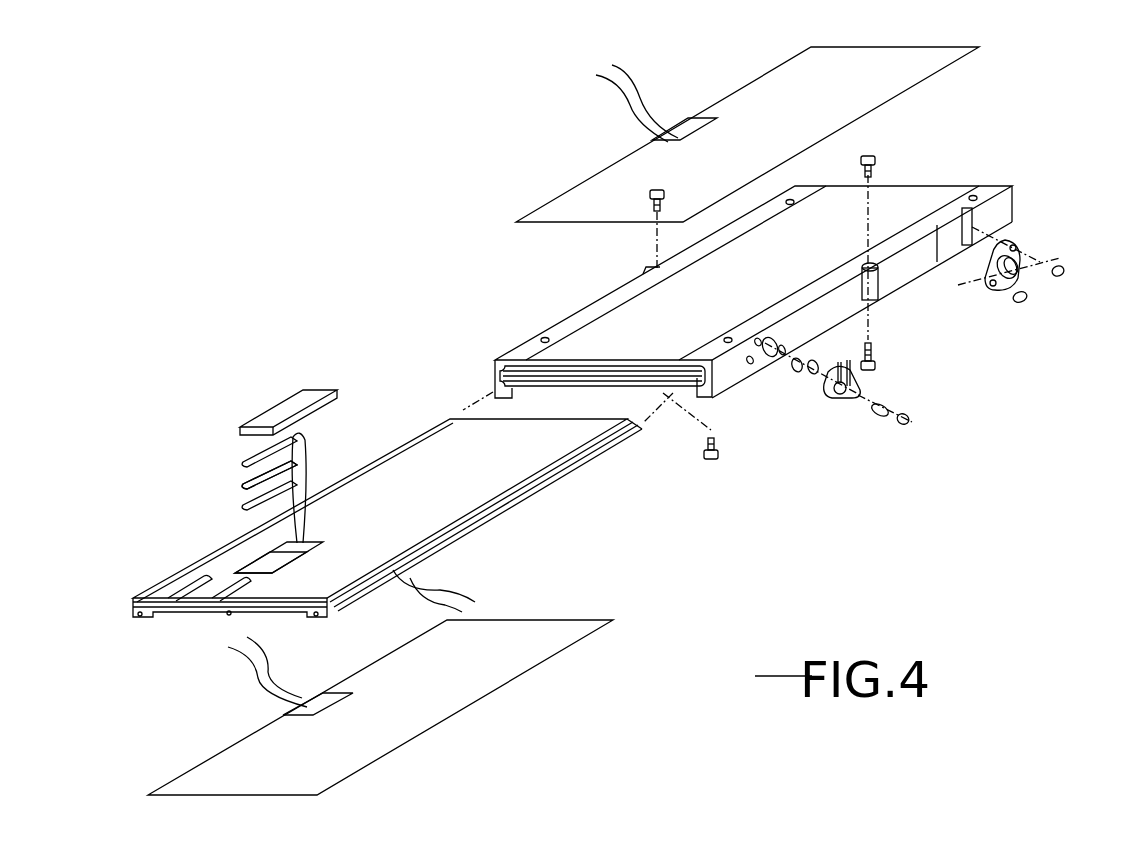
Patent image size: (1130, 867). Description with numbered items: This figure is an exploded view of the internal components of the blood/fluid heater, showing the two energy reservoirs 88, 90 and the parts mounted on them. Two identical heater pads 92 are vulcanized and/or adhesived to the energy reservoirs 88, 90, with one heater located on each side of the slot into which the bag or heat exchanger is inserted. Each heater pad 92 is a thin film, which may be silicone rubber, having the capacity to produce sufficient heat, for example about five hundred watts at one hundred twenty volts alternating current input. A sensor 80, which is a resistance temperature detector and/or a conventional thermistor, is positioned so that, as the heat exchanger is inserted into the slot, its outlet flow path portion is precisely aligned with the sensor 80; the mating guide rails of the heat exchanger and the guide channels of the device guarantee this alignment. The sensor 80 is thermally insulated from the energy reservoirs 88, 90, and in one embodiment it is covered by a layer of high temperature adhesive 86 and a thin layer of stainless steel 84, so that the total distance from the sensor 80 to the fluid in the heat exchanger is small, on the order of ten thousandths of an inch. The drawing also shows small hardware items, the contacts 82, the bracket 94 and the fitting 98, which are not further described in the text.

The sensor 80 is at (242, 460).
The contacts 82 is at (243, 522).
The thin layer of stainless steel 84 is at (300, 392).
The layer of high temperature adhesive 86 is at (335, 392).
The energy reservoir 88 is at (142, 615).
The energy reservoir 90 is at (510, 352).
The heater pad 92 is at (542, 213).
The mounting bracket 94 is at (847, 400).
The flange fitting 98 is at (1012, 243).